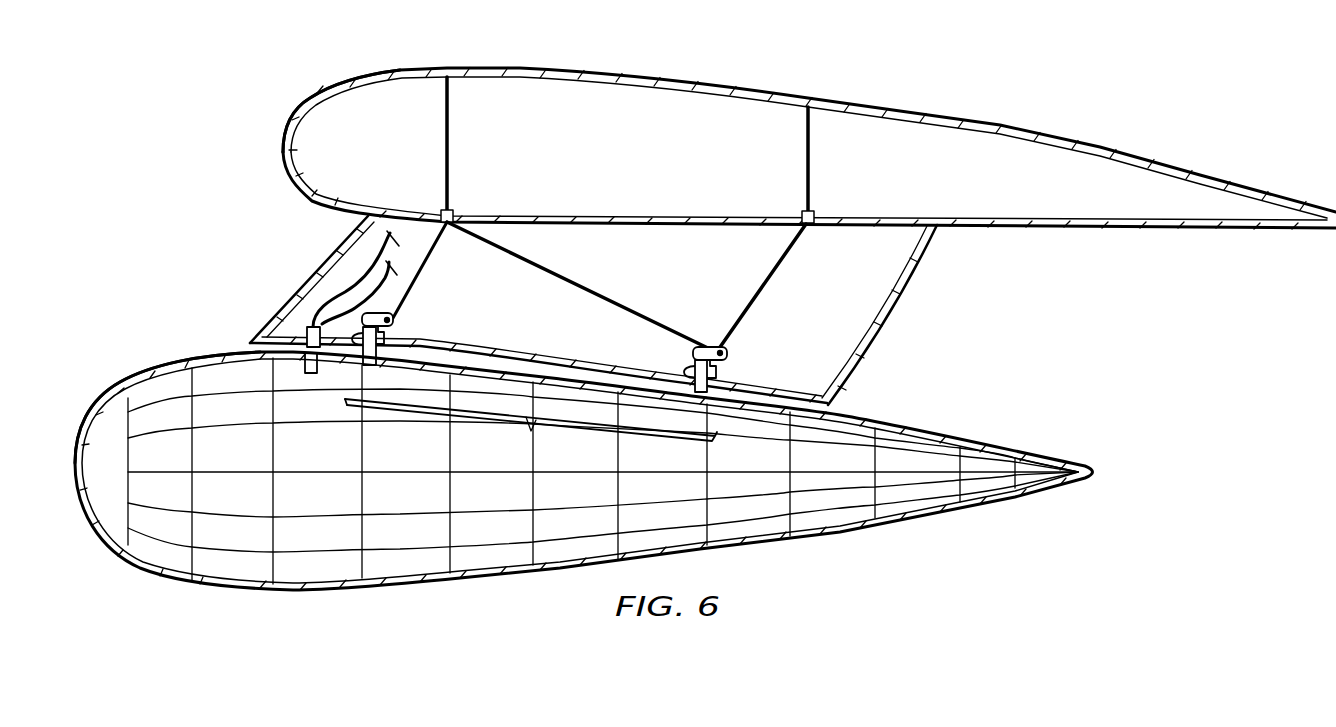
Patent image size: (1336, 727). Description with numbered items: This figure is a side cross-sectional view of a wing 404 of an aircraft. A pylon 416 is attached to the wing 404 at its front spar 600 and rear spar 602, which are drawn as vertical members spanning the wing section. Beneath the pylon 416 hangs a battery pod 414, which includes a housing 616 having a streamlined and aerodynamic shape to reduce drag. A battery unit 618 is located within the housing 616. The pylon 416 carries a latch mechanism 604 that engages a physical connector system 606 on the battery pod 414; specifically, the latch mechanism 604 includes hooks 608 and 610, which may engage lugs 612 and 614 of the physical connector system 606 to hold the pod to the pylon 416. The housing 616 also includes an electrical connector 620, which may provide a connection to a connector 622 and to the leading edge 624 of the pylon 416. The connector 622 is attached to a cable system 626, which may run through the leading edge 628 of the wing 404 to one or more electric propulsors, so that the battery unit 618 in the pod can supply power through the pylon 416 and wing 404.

The wing 404 is at (757, 89).
The battery pod 414 is at (152, 371).
The pylon 416 is at (887, 310).
The front spar 600 is at (446, 136).
The rear spar 602 is at (810, 160).
The latch mechanism 604 is at (531, 431).
The physical connector system 606 is at (409, 336).
The hook 608 is at (394, 320).
The hook 610 is at (729, 360).
The lug 612 is at (370, 362).
The lug 614 is at (696, 390).
The housing 616 is at (113, 403).
The battery unit 618 is at (508, 524).
The electrical connector 620 is at (309, 375).
The connector 622 is at (305, 333).
The leading edge of pylon 624 is at (313, 273).
The cable system 626 is at (374, 294).
The leading edge of wing 628 is at (287, 131).